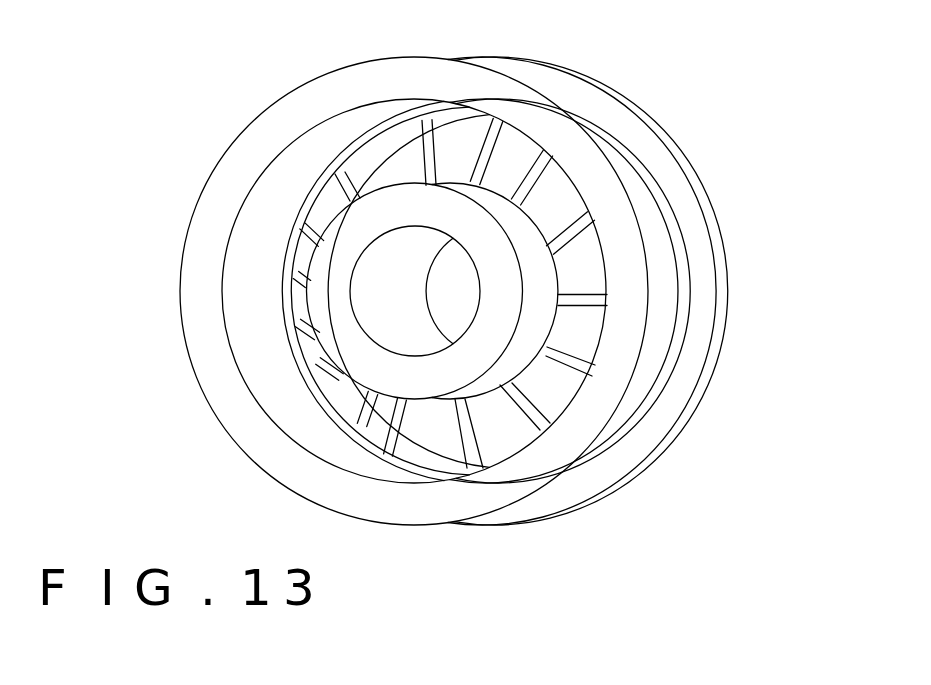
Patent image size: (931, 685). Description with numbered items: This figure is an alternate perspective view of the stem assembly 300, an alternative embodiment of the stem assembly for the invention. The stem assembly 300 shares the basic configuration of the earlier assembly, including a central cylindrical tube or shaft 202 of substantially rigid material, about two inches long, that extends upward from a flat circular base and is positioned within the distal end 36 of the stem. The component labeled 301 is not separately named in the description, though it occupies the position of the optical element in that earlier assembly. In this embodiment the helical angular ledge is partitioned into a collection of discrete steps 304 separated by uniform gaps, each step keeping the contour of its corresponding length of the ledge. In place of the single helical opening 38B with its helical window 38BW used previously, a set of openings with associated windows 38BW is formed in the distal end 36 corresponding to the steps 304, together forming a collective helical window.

The stem assembly 300 is at (158, 330).
The fan rotor 301 is at (517, 147).
The central cylindrical tube or shaft 202 is at (412, 204).
The discrete steps 304 is at (513, 140).
The helical opening 38B is at (287, 283).
The distal end 36 is at (643, 197).
The helical window 38BW is at (683, 303).